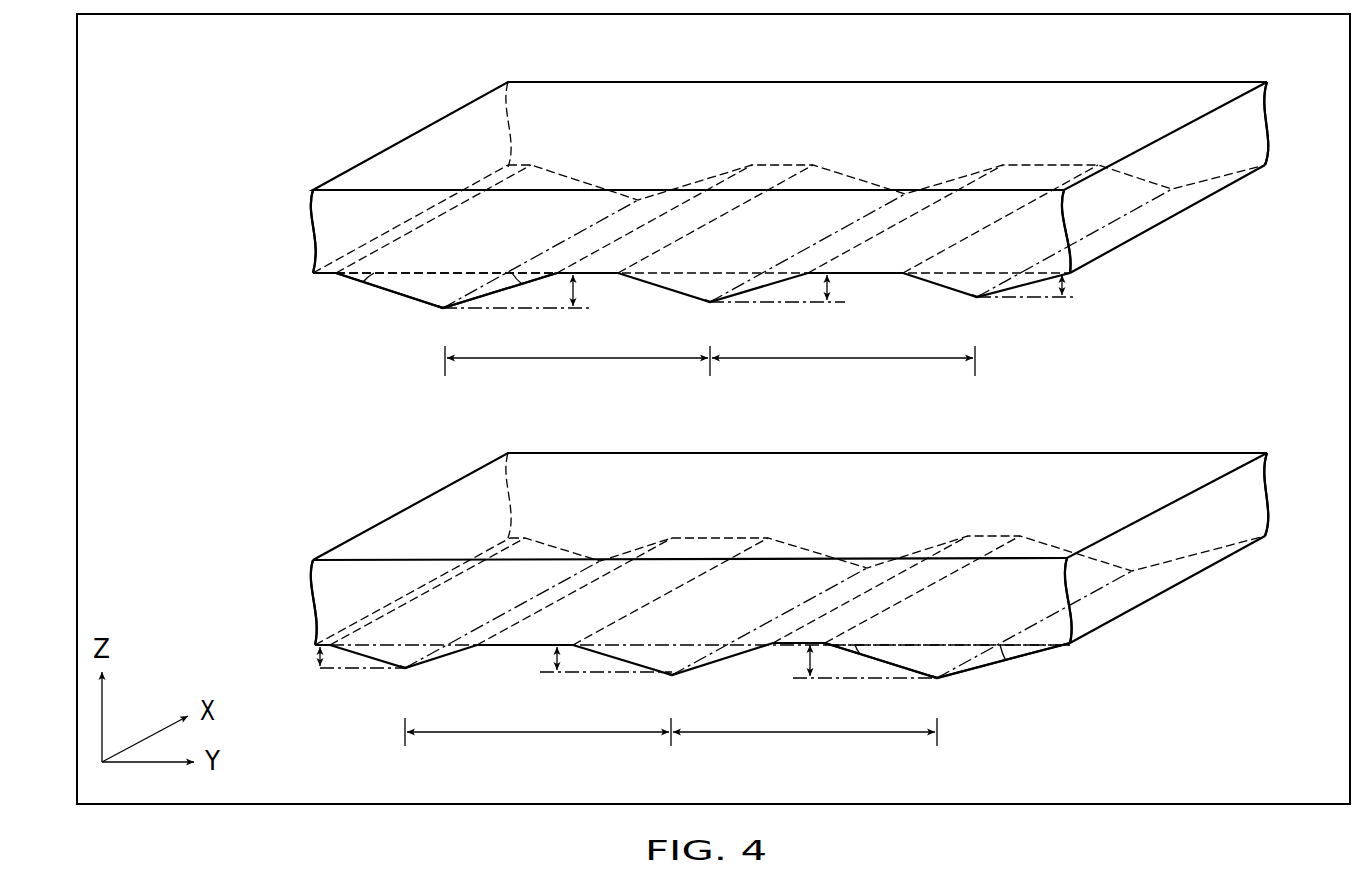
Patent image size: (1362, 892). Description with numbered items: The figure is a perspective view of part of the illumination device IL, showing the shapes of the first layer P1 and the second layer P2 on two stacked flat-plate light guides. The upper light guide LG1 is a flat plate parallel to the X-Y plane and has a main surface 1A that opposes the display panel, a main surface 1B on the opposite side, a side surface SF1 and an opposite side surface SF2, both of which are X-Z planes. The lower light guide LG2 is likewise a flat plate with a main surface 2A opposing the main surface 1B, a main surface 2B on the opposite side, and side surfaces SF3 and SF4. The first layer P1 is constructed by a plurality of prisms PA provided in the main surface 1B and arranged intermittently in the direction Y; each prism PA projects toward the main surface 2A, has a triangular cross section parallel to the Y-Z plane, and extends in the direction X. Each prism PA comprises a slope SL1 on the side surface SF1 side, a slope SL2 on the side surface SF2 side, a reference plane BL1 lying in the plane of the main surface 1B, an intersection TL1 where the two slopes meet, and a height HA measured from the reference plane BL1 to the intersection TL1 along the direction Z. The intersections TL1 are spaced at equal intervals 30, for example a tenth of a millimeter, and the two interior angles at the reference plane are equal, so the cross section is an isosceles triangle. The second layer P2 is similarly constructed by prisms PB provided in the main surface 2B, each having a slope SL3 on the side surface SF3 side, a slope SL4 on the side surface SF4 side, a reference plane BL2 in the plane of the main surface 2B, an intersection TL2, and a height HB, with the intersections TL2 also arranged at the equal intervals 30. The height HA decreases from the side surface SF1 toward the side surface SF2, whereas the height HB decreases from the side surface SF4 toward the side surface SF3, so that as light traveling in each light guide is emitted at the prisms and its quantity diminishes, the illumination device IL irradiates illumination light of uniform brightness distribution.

The main surface 1A is at (745, 98).
The main surface 1B is at (622, 285).
The illumination device IL is at (248, 146).
The light guide LG1 is at (1260, 126).
The side surface SF1 is at (263, 231).
The side surface SF2 is at (1192, 231).
The first layer P1 is at (253, 283).
The reference plane BL1 is at (423, 266).
The prism PA is at (347, 285).
The slope SL1 is at (390, 292).
The slope SL2 is at (491, 295).
The intersection TL1 is at (440, 311).
The height HA is at (772, 291).
The interval 30 is at (690, 555).
The main surface 2A is at (865, 466).
The main surface 2B is at (496, 650).
The light guide LG2 is at (1260, 498).
The side surface SF3 is at (263, 602).
The side surface SF4 is at (1194, 600).
The second layer P2 is at (253, 650).
The reference plane BL2 is at (936, 639).
The prism PB is at (446, 658).
The slope SL3 is at (878, 662).
The slope SL4 is at (1043, 653).
The intersection TL2 is at (402, 672).
The height HB is at (610, 661).